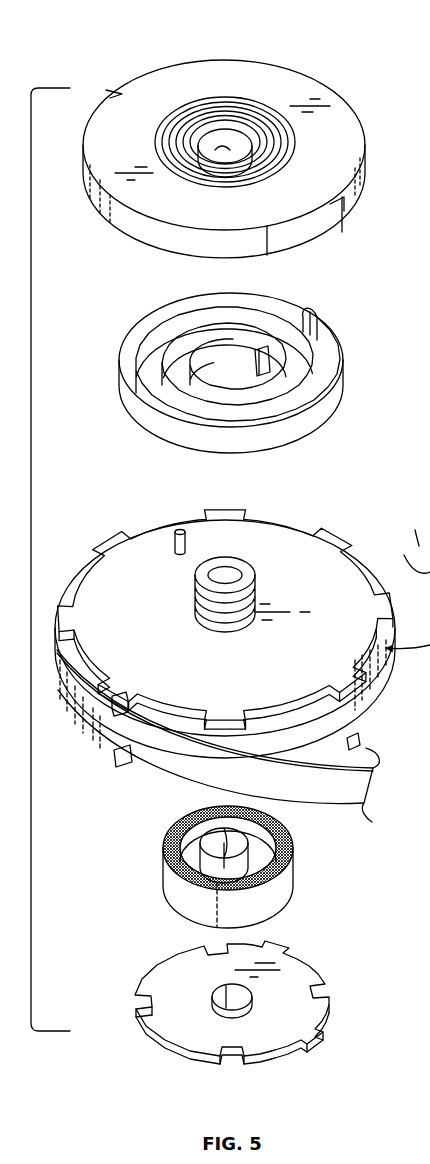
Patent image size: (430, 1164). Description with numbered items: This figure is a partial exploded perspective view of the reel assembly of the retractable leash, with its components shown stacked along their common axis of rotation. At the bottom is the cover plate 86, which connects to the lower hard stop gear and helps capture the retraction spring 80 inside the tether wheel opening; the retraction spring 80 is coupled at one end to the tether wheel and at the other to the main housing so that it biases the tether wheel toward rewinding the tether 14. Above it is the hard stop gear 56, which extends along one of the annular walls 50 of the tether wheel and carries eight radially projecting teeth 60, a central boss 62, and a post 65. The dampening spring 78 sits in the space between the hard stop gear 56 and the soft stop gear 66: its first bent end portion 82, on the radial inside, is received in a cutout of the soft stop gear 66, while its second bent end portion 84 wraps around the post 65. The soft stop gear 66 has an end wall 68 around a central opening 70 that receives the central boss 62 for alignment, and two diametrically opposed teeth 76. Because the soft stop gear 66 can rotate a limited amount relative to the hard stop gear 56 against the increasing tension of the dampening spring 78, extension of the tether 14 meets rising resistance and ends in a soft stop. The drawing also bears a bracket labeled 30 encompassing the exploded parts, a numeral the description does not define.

The tether 14 is at (335, 793).
The retractor assembly 30 is at (31, 545).
The annular walls 50 is at (372, 662).
The hard stop gear 56 is at (225, 604).
The teeth 60 is at (120, 698).
The central boss 62 is at (256, 590).
The post 65 is at (178, 530).
The soft stop gear 66 is at (243, 145).
The end wall 68 is at (340, 121).
The central opening 70 is at (233, 140).
The teeth 76 is at (108, 92).
The dampening spring 78 is at (218, 375).
The retraction spring 80 is at (150, 888).
The first bent end portion 82 is at (255, 365).
The second bent end portion 84 is at (310, 308).
The cover plate 86 is at (303, 1053).